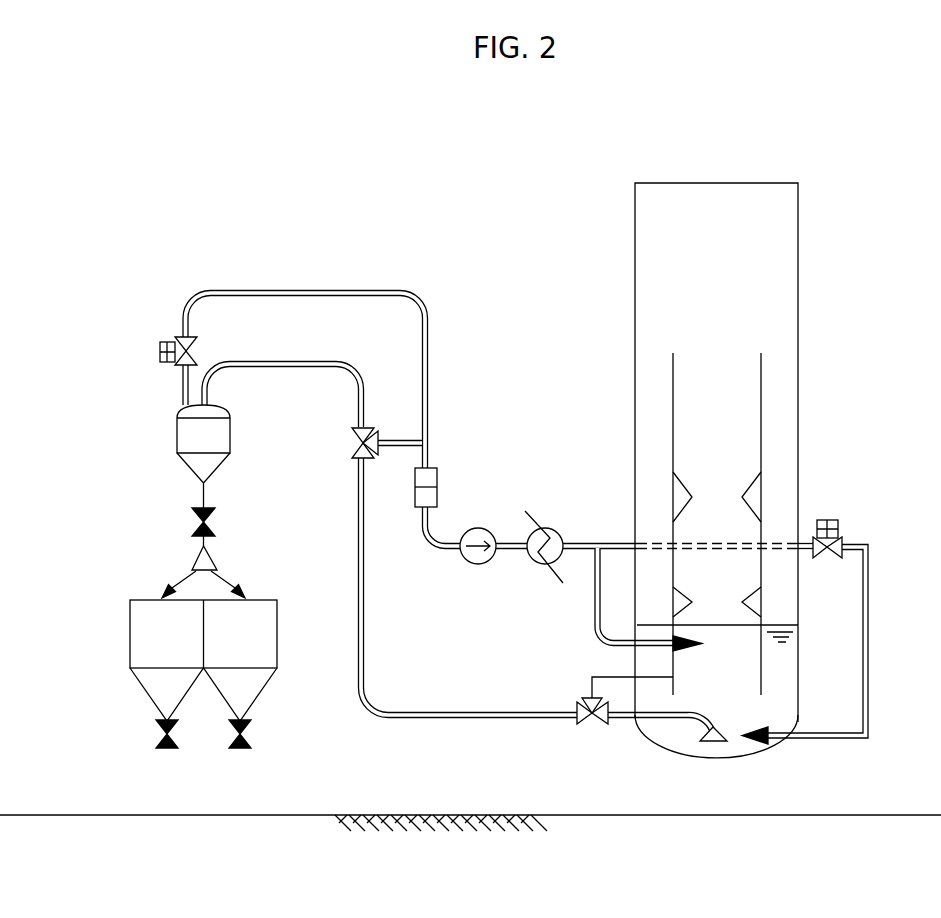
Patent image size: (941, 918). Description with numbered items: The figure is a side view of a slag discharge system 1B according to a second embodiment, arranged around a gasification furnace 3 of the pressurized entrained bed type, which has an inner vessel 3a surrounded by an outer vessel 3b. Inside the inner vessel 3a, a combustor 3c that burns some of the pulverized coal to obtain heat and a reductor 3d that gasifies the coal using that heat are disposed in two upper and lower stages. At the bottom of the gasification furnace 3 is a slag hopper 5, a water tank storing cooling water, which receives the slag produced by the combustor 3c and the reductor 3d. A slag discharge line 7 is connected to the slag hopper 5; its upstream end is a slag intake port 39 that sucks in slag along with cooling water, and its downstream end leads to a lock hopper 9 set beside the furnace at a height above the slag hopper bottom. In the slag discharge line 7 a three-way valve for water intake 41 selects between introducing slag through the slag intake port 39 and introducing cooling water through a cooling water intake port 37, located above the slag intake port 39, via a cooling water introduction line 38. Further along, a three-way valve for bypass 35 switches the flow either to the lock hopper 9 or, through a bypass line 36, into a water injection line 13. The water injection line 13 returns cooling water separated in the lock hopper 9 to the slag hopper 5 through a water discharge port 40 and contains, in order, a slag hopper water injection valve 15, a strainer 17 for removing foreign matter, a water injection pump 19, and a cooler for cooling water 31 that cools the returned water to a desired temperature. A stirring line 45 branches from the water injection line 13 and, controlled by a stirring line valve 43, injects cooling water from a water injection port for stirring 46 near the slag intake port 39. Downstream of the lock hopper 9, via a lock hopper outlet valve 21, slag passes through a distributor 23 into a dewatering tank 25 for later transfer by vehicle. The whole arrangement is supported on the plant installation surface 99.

The slag discharge system 1B is at (302, 235).
The gasification furnace 3 is at (783, 470).
The inner vessel 3a is at (762, 412).
The outer vessel 3b is at (798, 465).
The combustor 3c is at (728, 585).
The reductor 3d is at (728, 441).
The slag hopper 5 is at (800, 642).
The slag discharge line 7 is at (500, 720).
The lock hopper 9 is at (177, 432).
The water injection line 13 is at (421, 298).
The slag hopper water injection valve 15 is at (160, 350).
The strainer 17 is at (438, 478).
The water injection pump 19 is at (478, 565).
The lock hopper outlet valve 21 is at (192, 523).
The distributor 23 is at (214, 559).
The dewatering tank 25 is at (130, 635).
The cooler for cooling water 31 is at (551, 524).
The three-way valve for bypass 35 is at (353, 438).
The bypass line 36 is at (402, 438).
The cooling water intake port 37 is at (675, 677).
The cooling water introduction line 38 is at (592, 676).
The slag intake port 39 is at (712, 742).
The water discharge port 40 is at (702, 648).
The three-way valve for water intake 41 is at (580, 725).
The stirring line valve 43 is at (838, 522).
The stirring line 45 is at (868, 623).
The water injection port for stirring 46 is at (757, 744).
The installation surface 99 is at (822, 814).